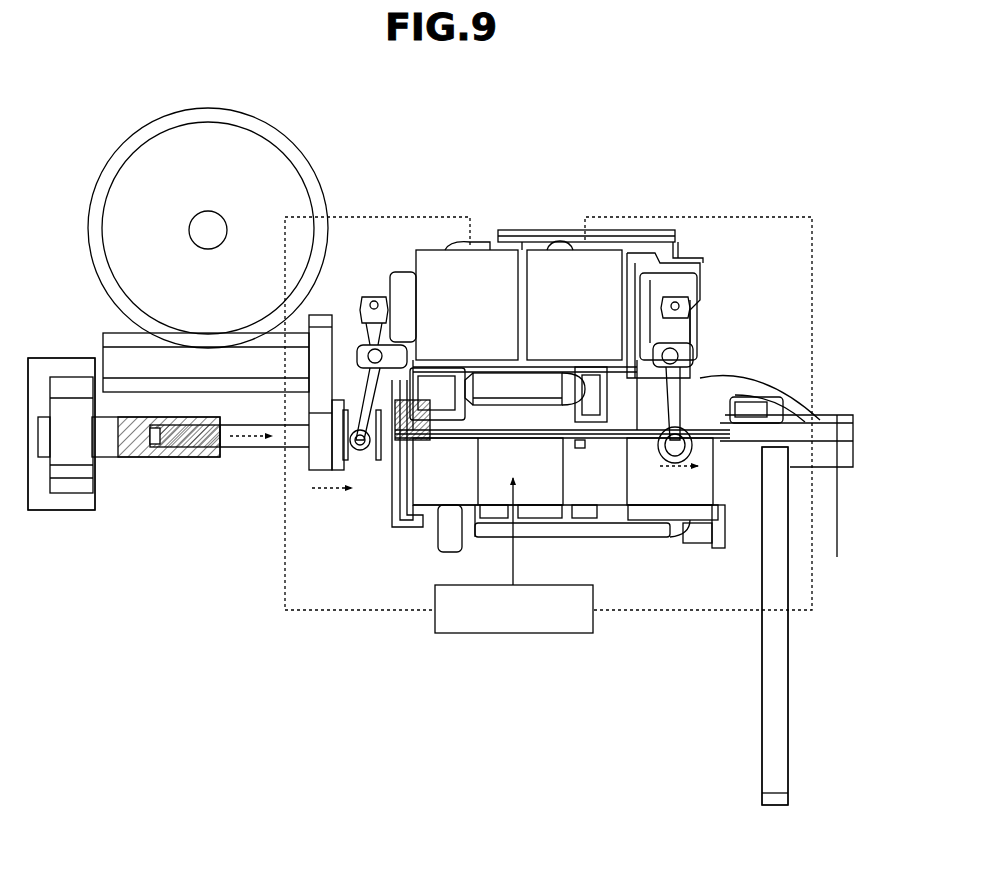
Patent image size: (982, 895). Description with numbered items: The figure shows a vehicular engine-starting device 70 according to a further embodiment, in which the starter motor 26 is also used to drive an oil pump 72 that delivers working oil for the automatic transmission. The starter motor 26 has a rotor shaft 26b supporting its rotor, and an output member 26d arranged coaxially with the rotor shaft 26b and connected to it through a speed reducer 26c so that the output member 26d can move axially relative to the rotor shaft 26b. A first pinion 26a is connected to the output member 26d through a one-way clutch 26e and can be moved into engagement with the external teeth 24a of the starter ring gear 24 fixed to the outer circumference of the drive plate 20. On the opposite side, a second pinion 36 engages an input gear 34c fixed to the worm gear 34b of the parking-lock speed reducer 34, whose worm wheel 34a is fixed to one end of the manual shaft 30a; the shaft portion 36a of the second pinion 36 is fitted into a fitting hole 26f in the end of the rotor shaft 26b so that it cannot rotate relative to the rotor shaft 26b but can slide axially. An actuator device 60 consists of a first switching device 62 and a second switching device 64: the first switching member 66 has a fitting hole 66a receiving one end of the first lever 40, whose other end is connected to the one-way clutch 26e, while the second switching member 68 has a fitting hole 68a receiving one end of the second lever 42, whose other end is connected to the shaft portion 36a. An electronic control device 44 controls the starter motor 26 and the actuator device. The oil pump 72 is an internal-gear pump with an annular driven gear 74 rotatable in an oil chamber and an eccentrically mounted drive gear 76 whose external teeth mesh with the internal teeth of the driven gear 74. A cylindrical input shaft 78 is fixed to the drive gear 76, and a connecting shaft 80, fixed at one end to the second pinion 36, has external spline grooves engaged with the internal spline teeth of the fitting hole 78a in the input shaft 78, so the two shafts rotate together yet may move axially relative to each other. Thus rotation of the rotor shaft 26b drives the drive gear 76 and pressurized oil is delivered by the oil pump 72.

The drive plate 20 is at (758, 736).
The starter ring gear 24 is at (778, 561).
The external teeth 24a is at (786, 798).
The starter motor 26 is at (430, 514).
The first pinion 26a is at (790, 415).
The rotor shaft 26b is at (500, 440).
The speed reducer 26c is at (600, 380).
The output member 26d is at (740, 395).
The one-way clutch 26e is at (720, 380).
The fitting hole 26f is at (440, 400).
The manual shaft 30a is at (210, 222).
The speed reducer 34 is at (277, 118).
The worm wheel 34a is at (176, 133).
The worm gear 34b is at (112, 356).
The input gear 34c is at (320, 318).
The second pinion 36 is at (315, 450).
The shaft portion 36a is at (386, 478).
The first lever 40 is at (655, 320).
The second lever 42 is at (395, 330).
The electronic control device 44 is at (502, 630).
The actuator device 60 is at (556, 228).
The first switching device 62 is at (537, 255).
The second switching device 64 is at (472, 245).
The first switching member 66 is at (690, 300).
The fitting hole 66a is at (690, 318).
The second switching member 68 is at (368, 310).
The fitting hole 68a is at (370, 300).
The engine-starting device 70 is at (690, 243).
The oil pump 72 is at (105, 482).
The driven gear 74 is at (68, 388).
The drive gear 76 is at (57, 405).
The input shaft 78 is at (133, 456).
The fitting hole 78a is at (185, 450).
The connecting shaft 80 is at (254, 442).